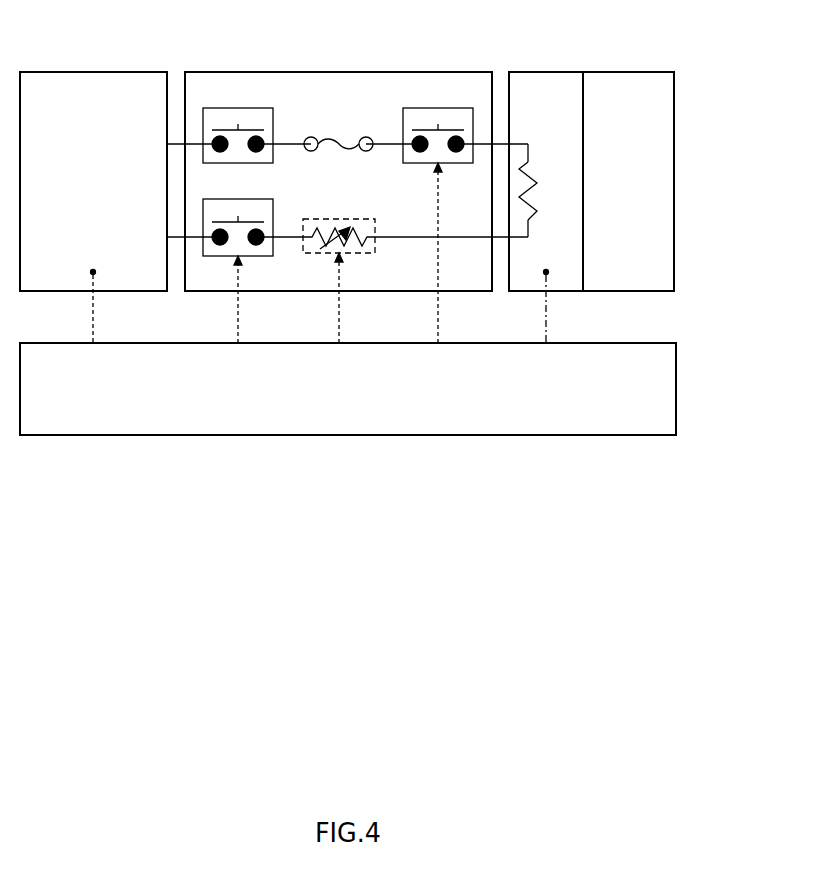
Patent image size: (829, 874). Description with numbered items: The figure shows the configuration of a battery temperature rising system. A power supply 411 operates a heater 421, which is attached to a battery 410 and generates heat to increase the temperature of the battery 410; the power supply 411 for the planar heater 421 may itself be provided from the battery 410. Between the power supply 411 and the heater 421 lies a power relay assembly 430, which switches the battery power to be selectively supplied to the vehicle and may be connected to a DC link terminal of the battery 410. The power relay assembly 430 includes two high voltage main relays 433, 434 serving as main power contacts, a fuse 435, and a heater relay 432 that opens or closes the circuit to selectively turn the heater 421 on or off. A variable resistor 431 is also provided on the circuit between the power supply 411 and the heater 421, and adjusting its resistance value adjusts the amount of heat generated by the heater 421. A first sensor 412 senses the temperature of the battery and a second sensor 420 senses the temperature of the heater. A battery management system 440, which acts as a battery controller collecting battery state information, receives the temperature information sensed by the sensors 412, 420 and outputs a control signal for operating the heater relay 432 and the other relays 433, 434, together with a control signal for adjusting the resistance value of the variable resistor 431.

The battery 410 is at (628, 72).
The power supply 411 is at (92, 72).
The first sensor 412 is at (91, 274).
The second sensor 420 is at (549, 273).
The heater 421 is at (544, 72).
The power relay assembly 430 is at (336, 72).
The variable resistor 431 is at (366, 255).
The heater relay 432 is at (437, 108).
The high voltage main relay 433 is at (262, 108).
The high voltage main relay 434 is at (262, 256).
The fuse 435 is at (337, 141).
The battery management system 440 is at (676, 387).